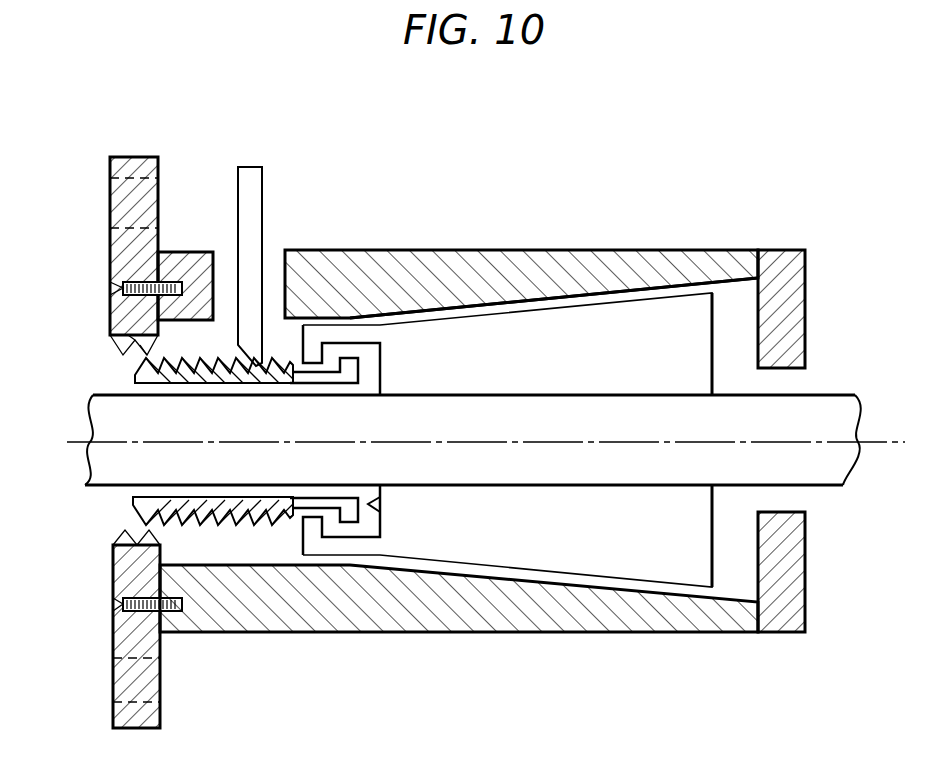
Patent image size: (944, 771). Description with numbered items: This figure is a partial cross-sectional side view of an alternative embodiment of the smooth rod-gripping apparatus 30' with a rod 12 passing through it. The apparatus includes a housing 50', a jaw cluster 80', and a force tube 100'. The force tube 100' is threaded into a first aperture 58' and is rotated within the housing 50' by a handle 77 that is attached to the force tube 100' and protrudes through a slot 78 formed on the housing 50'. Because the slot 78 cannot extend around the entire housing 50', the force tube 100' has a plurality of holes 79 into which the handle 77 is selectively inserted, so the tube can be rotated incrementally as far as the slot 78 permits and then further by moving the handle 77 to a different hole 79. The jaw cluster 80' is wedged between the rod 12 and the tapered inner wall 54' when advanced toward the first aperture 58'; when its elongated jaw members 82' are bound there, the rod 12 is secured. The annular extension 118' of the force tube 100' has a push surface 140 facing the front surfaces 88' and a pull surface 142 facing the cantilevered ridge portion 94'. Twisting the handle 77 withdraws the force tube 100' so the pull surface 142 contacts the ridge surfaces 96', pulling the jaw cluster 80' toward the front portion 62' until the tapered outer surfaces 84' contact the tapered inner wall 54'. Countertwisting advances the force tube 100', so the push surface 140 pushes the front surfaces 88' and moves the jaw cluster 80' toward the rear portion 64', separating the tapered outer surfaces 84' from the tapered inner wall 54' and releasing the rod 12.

The rod 12 is at (815, 405).
The smooth rod-gripping apparatus 30' is at (801, 396).
The housing 50' is at (523, 239).
The tapered inner wall 54' is at (554, 261).
The first aperture 58' is at (120, 269).
The front portion 62' is at (106, 621).
The rear portion 64' is at (460, 626).
The handle 77 is at (263, 196).
The slot 78 is at (273, 281).
The holes 79 is at (257, 352).
The jaw cluster 80' is at (546, 249).
The elongated jaw members 82' is at (507, 458).
The tapered outer surfaces 84' is at (507, 300).
The front surfaces 88' is at (440, 608).
The cantilevered ridge portion 94' is at (251, 616).
The ridge surfaces 96' is at (324, 507).
The force tube 100' is at (265, 294).
The annular extension 118' is at (382, 593).
The push surface 140 is at (368, 509).
The pull surface 142 is at (342, 516).